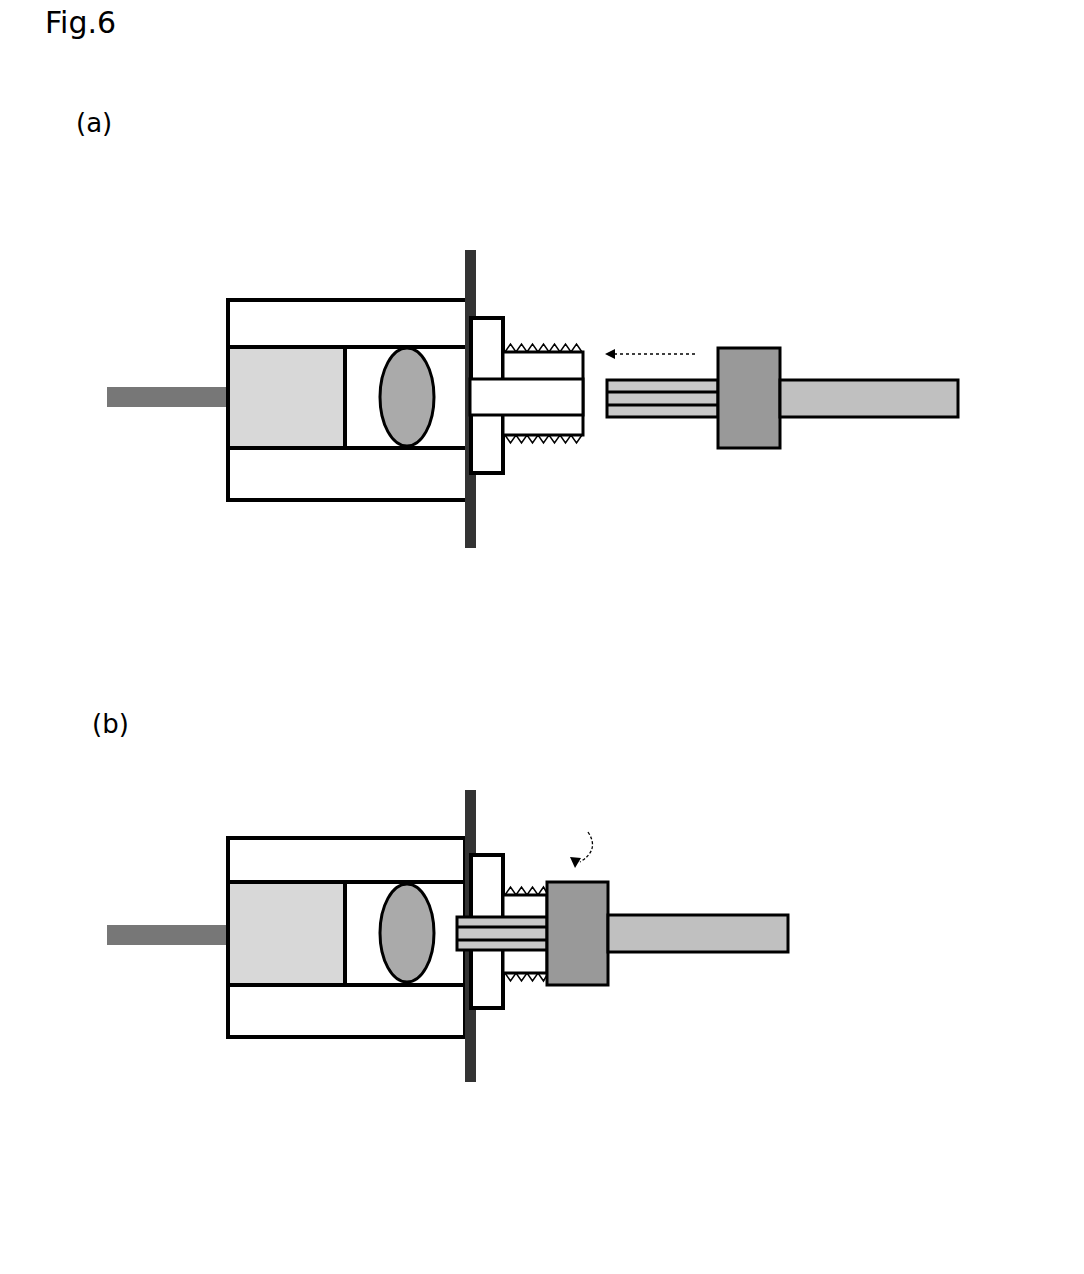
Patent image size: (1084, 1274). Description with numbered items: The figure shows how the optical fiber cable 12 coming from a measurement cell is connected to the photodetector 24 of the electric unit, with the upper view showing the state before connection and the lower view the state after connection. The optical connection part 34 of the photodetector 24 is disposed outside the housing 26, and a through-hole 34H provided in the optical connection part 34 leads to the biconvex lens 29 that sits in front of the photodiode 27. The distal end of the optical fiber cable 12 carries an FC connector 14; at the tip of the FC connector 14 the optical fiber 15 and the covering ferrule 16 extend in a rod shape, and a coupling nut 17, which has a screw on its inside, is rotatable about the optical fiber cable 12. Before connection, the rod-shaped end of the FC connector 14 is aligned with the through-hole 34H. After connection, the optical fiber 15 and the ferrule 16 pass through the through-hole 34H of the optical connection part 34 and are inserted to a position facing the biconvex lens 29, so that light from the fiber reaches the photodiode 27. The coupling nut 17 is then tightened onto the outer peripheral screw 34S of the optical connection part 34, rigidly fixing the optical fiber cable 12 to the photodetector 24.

The optical fiber cable 12 is at (862, 386).
The FC connector 14 is at (707, 656).
The optical fiber 15 is at (689, 398).
The ferrule 16 is at (640, 420).
The coupling nut 17 is at (758, 435).
The photodetector 24 is at (283, 283).
The housing 26 is at (466, 267).
The photodiode 27 is at (275, 440).
The biconvex lens 29 is at (402, 443).
The optical connection part 34 is at (508, 345).
The through-hole 34H is at (558, 393).
The outer peripheral screw 34S is at (522, 884).